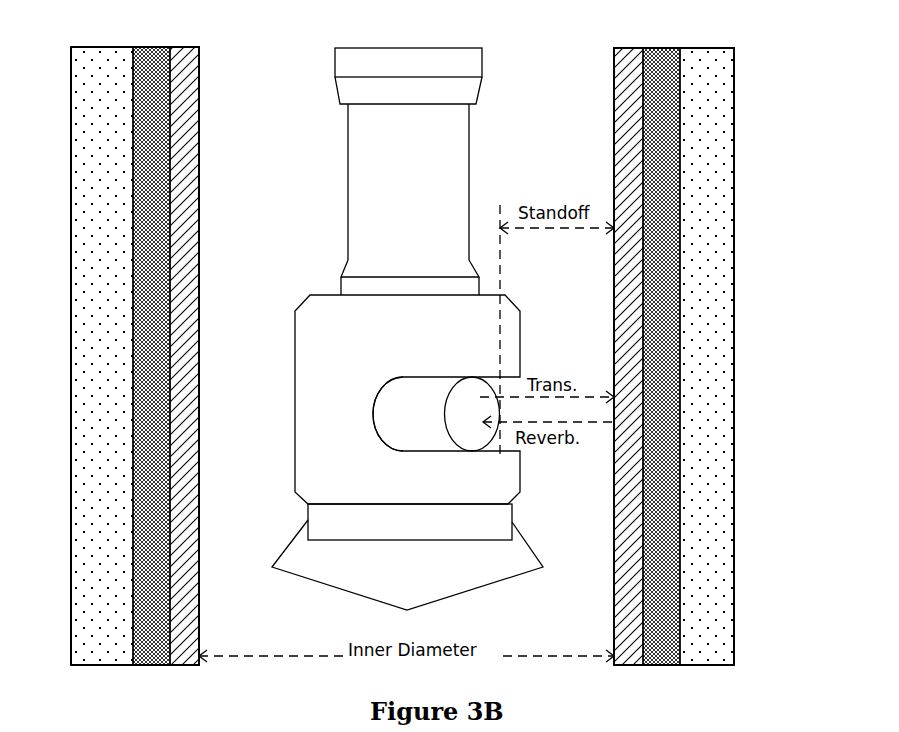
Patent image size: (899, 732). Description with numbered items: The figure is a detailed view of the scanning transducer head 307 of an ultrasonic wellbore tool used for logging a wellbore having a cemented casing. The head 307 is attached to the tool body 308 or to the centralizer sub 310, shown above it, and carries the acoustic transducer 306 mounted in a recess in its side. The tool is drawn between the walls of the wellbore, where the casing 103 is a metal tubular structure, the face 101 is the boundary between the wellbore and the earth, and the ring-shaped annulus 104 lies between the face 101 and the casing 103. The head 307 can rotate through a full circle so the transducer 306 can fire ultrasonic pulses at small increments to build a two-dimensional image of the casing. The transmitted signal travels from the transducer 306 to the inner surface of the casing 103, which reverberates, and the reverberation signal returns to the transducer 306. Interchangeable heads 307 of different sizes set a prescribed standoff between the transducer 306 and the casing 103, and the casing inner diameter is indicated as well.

The face 101 is at (715, 665).
The casing 103 is at (625, 665).
The annulus 104 is at (669, 48).
The transducer 306 is at (387, 442).
The scanning transducer head 307 is at (330, 335).
The tool body 308 is at (445, 171).
The centralizer sub 310 is at (445, 183).